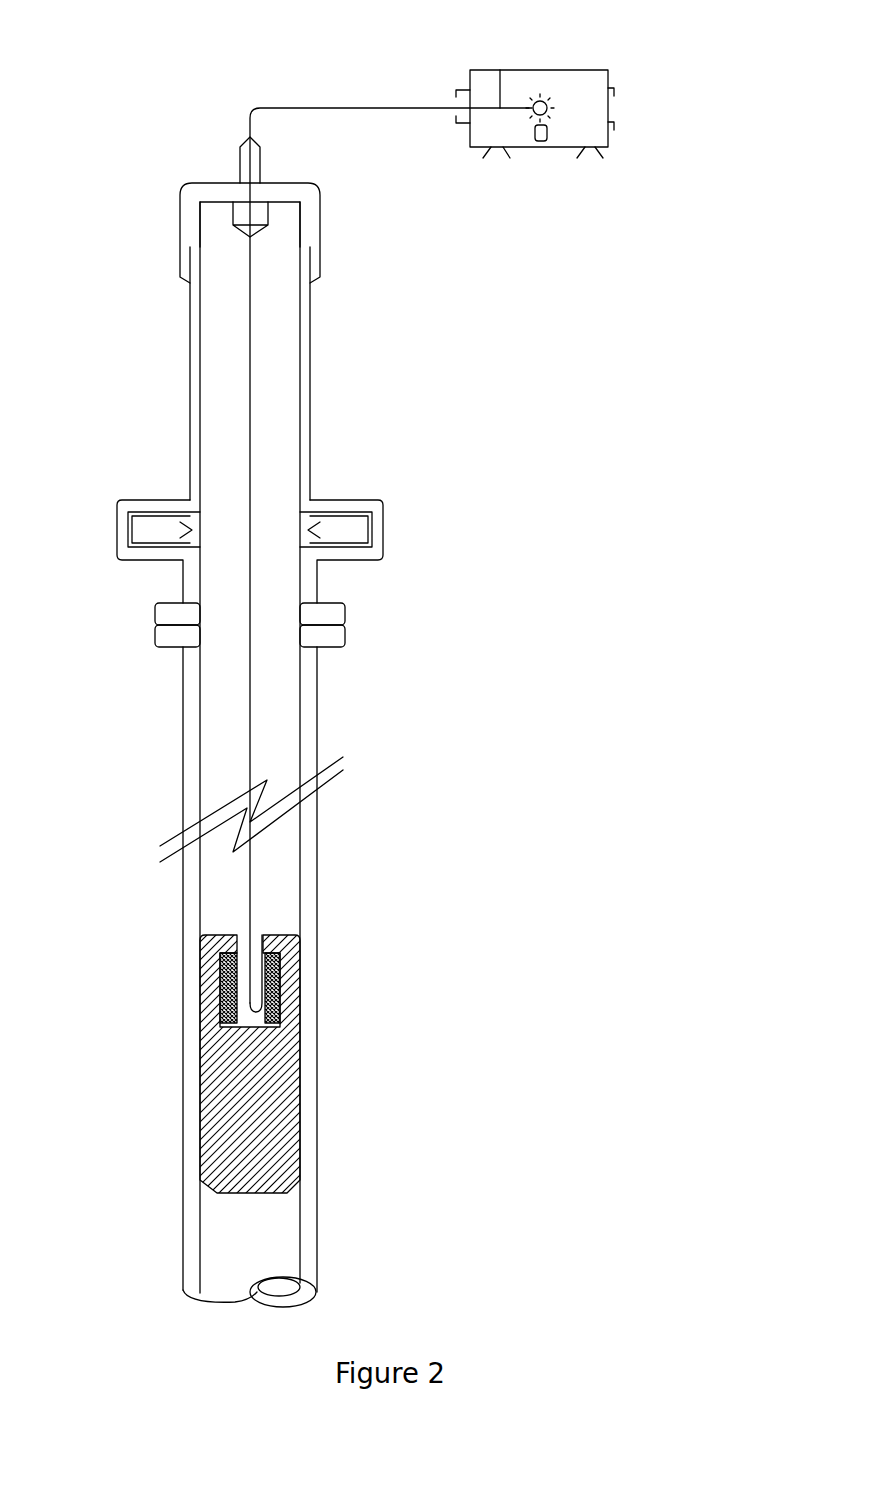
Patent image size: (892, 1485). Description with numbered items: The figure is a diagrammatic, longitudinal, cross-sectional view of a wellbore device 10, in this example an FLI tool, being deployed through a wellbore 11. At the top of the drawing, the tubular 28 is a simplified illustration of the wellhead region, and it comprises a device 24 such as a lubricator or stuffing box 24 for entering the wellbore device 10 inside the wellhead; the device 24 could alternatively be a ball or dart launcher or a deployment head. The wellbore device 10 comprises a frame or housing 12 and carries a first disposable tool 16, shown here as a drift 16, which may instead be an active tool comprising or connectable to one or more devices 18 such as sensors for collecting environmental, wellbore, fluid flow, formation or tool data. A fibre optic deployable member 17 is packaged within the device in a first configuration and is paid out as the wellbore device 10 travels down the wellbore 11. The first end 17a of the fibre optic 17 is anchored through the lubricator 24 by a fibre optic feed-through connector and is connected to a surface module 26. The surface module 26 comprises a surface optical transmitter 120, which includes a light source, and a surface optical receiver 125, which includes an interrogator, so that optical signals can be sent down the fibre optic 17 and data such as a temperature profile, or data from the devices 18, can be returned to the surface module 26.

The wellbore device 10 is at (340, 1112).
The wellbore 11 is at (300, 878).
The housing 12 is at (300, 938).
The first disposable tool 16 is at (303, 1056).
The fibre optic deployable member 17 is at (250, 708).
The first end of the deployable member 17a is at (500, 70).
The devices 18 is at (200, 1002).
The lubricator 24 is at (262, 160).
The surface module 26 is at (609, 108).
The tubular 28 is at (310, 443).
The surface optical transmitter 120 is at (543, 104).
The surface optical receiver 125 is at (547, 141).